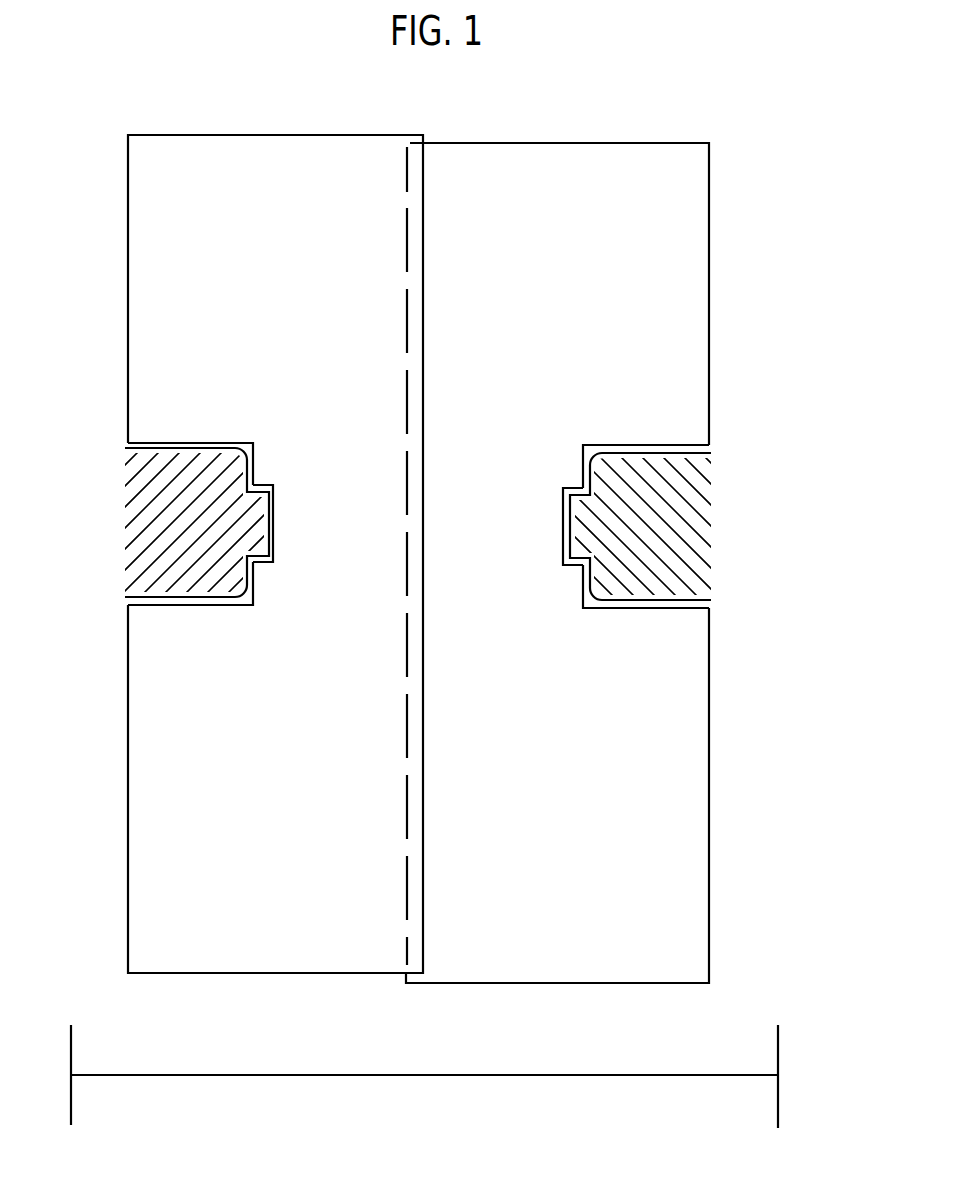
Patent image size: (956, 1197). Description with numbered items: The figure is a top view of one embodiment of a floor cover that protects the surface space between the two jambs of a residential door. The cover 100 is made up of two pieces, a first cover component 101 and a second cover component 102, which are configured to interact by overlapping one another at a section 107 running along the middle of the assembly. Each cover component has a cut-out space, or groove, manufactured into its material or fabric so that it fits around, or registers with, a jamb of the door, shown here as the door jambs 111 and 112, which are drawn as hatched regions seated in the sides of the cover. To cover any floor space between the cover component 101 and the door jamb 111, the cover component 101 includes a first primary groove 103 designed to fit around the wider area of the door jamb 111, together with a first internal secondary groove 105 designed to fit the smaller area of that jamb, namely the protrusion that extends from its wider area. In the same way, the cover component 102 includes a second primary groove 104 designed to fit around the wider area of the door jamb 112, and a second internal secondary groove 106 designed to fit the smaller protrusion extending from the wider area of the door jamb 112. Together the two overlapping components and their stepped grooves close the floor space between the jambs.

The cover 100 is at (440, 1077).
The cover component 101 is at (147, 177).
The cover component 102 is at (685, 943).
The first primary groove 103 is at (152, 442).
The second primary groove 104 is at (649, 608).
The first internal secondary groove 105 is at (263, 485).
The second internal secondary groove 106 is at (572, 567).
The section 107 is at (407, 673).
The door jamb 111 is at (130, 518).
The door jamb 112 is at (703, 545).